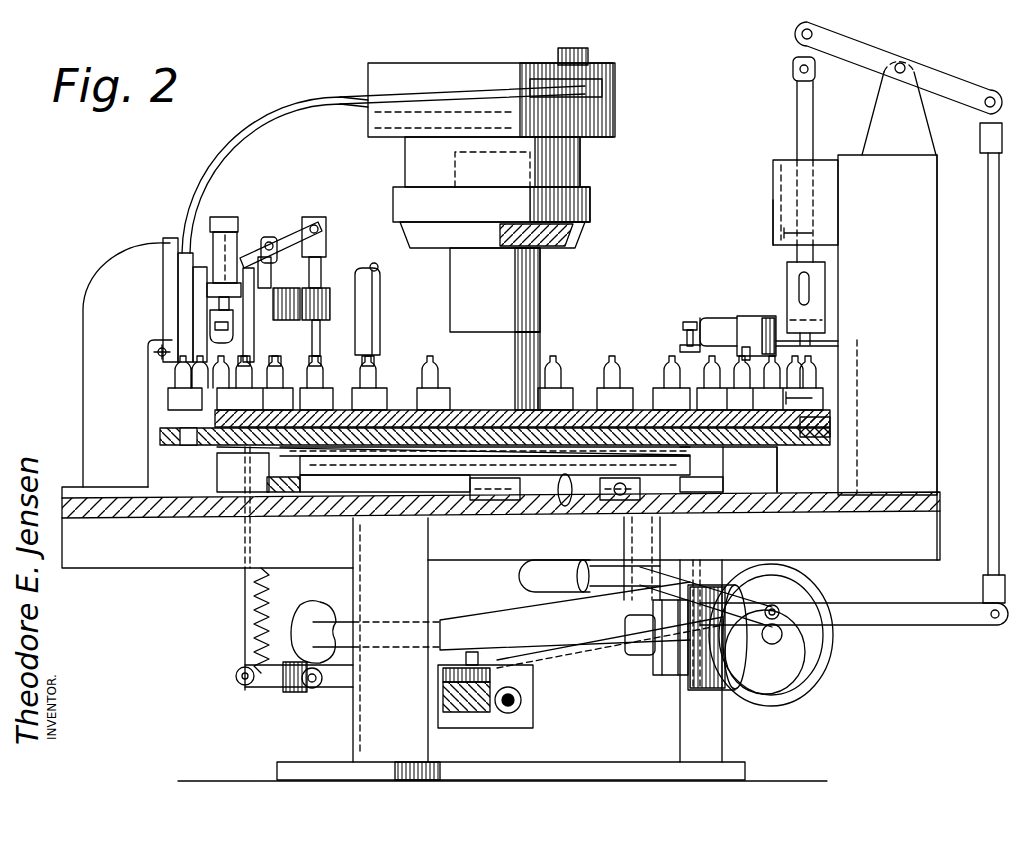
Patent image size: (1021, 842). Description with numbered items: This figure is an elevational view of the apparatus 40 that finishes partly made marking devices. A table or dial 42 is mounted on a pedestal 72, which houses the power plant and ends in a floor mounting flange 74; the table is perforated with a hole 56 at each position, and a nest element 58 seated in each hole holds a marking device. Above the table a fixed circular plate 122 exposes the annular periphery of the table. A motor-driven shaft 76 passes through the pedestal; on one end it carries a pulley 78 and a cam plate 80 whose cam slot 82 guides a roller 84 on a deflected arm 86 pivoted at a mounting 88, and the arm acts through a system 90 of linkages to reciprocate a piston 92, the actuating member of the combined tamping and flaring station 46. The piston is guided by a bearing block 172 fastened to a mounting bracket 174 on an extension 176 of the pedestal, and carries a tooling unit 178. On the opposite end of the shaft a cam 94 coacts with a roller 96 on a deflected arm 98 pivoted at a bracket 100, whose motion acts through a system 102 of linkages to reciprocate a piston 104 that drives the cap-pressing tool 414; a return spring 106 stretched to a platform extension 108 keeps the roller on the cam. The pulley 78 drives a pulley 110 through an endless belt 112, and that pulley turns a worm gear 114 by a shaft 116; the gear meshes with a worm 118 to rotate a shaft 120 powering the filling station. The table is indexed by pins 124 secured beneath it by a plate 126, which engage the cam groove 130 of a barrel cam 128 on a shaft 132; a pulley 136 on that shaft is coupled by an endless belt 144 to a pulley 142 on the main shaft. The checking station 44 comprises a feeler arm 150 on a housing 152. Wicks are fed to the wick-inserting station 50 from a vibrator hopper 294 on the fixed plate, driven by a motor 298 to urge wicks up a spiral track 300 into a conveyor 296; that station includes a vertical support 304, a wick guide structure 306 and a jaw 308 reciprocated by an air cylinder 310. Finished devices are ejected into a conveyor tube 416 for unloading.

The apparatus 40 is at (84, 271).
The table or dial 42 is at (205, 441).
The checking station 44 is at (702, 314).
The combined tamping and flaring station 46 is at (768, 237).
The wick-inserting station 50 is at (176, 232).
The hole 56 is at (333, 272).
The nest element or receptacle 58 is at (700, 386).
The pedestal 72 is at (402, 610).
The floor mounting flange 74 is at (277, 768).
The shaft 76 is at (345, 612).
The pulley 78 is at (690, 668).
The cam plate 80 is at (800, 568).
The cam slot 82 is at (788, 705).
The roller 84 is at (820, 590).
The deflected arm 86 is at (906, 603).
The mounting 88 is at (525, 578).
The system of mechanical linkages 90 is at (968, 73).
The piston 92 is at (798, 118).
The cam 94 is at (298, 606).
The roller 96 is at (292, 695).
The deflected arm 98 is at (250, 688).
The bracket 100 is at (338, 700).
The system of mechanical linkages 102 is at (238, 615).
The piston 104 is at (320, 230).
The return spring 106 is at (250, 648).
The platform extension 108 is at (135, 568).
The pulley 110 is at (492, 625).
The endless belt 112 is at (580, 660).
The worm gear 114 is at (440, 709).
The shaft 116 is at (440, 679).
The worm 118 is at (500, 701).
The shaft 120 is at (520, 718).
The circular plate 122 is at (770, 442).
The pins 124 is at (397, 410).
The plate 126 is at (484, 410).
The barrel cam 128 is at (560, 505).
The cam groove 130 is at (552, 503).
The shaft 132 is at (598, 515).
The pulley 136 is at (700, 475).
The pulley 142 is at (625, 633).
The endless belt 144 is at (690, 545).
The feeler arm 150 is at (700, 350).
The housing 152 is at (735, 320).
The bearing block 172 is at (775, 178).
The mounting bracket 174 is at (868, 224).
The extension 176 is at (893, 500).
The tooling unit 178 is at (830, 300).
The vibrator hopper 294 is at (616, 112).
The conveyor 296 is at (318, 97).
The motor 298 is at (405, 167).
The spiral track 300 is at (478, 100).
The vertical support 304 is at (83, 356).
The wick guide structure 306 is at (170, 258).
The jaw 308 is at (208, 318).
The air cylinder 310 is at (223, 228).
The tool 414 is at (320, 360).
The conveyor tube 416 is at (380, 307).